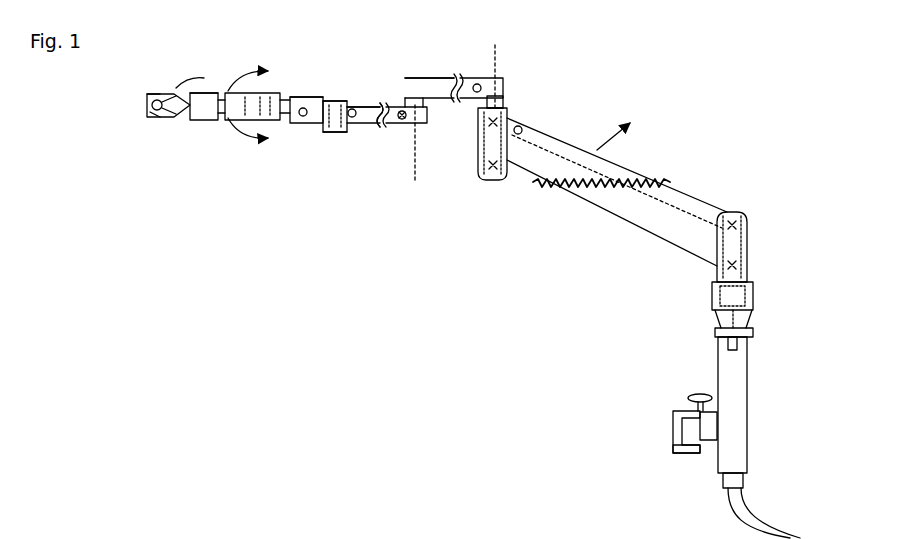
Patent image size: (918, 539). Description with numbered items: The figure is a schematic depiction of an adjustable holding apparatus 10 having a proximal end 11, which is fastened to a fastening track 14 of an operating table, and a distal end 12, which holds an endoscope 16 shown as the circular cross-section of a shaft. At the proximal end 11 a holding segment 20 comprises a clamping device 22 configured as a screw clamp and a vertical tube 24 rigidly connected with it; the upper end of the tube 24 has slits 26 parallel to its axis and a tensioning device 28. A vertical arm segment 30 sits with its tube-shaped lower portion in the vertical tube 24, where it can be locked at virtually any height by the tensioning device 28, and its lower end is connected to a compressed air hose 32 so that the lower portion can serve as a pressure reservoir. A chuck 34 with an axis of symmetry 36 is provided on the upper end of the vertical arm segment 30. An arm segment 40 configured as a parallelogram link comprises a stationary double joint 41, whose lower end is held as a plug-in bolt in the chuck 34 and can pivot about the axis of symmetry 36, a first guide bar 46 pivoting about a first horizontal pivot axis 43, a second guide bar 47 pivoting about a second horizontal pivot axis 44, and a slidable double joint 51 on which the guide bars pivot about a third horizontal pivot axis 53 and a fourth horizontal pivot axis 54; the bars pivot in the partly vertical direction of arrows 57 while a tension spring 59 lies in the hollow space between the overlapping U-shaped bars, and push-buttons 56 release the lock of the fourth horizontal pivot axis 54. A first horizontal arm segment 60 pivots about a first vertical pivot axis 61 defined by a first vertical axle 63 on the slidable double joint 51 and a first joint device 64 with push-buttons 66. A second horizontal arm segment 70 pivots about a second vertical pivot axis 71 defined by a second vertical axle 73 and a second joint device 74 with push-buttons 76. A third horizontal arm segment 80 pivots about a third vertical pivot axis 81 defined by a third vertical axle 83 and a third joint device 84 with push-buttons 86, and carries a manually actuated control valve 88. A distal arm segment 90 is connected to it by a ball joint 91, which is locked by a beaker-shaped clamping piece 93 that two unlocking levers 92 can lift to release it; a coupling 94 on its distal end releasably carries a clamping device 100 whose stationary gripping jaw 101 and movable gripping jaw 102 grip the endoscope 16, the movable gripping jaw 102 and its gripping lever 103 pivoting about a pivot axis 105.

The adjustable holding apparatus 10 is at (300, 338).
The proximal end 11 is at (538, 381).
The distal end 12 is at (166, 233).
The fastening track 14 is at (683, 437).
The endoscope 16 is at (150, 104).
The holding segment 20 is at (671, 387).
The clamping device 22 is at (677, 449).
The vertical tube 24 is at (737, 408).
The slits 26 is at (727, 347).
The tensioning device 28 is at (714, 333).
The vertical arm segment 30 is at (717, 323).
The compressed air hose 32 is at (742, 512).
The chuck 34 is at (713, 300).
The axis of symmetry 36 is at (745, 316).
The arm segment 40 is at (606, 100).
The stationary double joint 41 is at (734, 210).
The first horizontal pivot axis 43 is at (746, 263).
The second horizontal pivot axis 44 is at (745, 229).
The first guide bar 46 is at (650, 238).
The second guide bar 47 is at (693, 201).
The slidable double joint 51 is at (480, 165).
The third horizontal pivot axis 53 is at (490, 180).
The fourth horizontal pivot axis 54 is at (483, 121).
The push-buttons 56 is at (523, 129).
The arrows 57 is at (562, 249).
The tension spring 59 is at (615, 187).
The first horizontal arm segment 60 is at (443, 77).
The first vertical pivot axis 61 is at (496, 50).
The first vertical axle 63 is at (507, 101).
The first joint device 64 is at (502, 86).
The push-buttons 66 is at (473, 85).
The second horizontal arm segment 70 is at (362, 105).
The second vertical pivot axis 71 is at (413, 184).
The second vertical axle 73 is at (407, 96).
The second joint device 74 is at (408, 125).
The push-buttons 76 is at (381, 102).
The third horizontal arm segment 80 is at (301, 95).
The third vertical pivot axis 81 is at (340, 134).
The third vertical axle 83 is at (337, 100).
The third joint device 84 is at (335, 125).
The push-buttons 86 is at (353, 118).
The control valve 88 is at (303, 117).
The distal arm segment 90 is at (225, 168).
The ball joint 91 is at (270, 110).
The unlocking levers 92 is at (243, 132).
The beaker-shaped clamping piece 93 is at (221, 122).
The coupling 94 is at (213, 92).
The clamping device 100 is at (136, 160).
The stationary gripping jaw 101 is at (150, 112).
The movable gripping jaw 102 is at (157, 93).
The gripping lever 103 is at (198, 78).
The pivot axis 105 is at (192, 112).